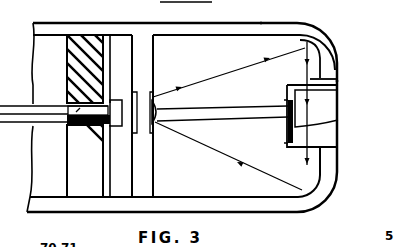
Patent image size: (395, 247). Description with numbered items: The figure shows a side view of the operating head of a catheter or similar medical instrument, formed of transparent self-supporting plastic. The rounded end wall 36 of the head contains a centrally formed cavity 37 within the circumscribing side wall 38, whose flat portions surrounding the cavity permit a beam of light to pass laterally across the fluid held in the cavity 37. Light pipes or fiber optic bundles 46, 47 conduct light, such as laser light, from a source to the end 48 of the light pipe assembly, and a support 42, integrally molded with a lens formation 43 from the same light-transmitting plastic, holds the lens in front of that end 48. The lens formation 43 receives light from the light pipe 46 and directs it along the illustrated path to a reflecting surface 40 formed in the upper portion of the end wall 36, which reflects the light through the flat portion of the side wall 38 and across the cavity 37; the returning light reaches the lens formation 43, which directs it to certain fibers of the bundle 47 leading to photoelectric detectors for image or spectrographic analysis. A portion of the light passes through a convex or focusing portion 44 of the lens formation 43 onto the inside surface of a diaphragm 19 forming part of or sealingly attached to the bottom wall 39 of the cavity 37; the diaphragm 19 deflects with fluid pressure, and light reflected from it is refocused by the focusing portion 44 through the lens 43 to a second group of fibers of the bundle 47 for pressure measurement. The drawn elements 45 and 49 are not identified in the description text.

The diaphragm 19 is at (333, 120).
The end wall 36 is at (312, 32).
The cavity 37 is at (322, 105).
The side wall 38 is at (333, 77).
The bottom wall 39 is at (289, 140).
The reflecting surface 40 is at (320, 50).
The support 42 is at (143, 165).
The lens formation 43 is at (154, 96).
The convex or focusing portion 44 is at (158, 111).
The upper hatched block 45 is at (77, 73).
The light pipe or fiber optic bundle 46 is at (15, 106).
The light pipe or fiber optic bundle 47 is at (5, 123).
The end of the assembly of light pipes 48 is at (63, 132).
The slider head 49 is at (116, 104).